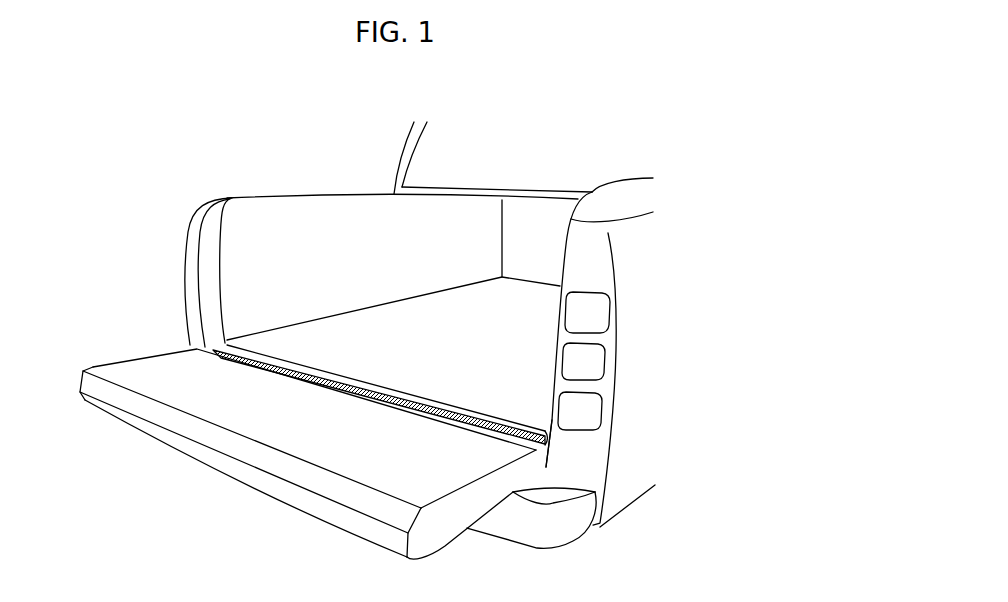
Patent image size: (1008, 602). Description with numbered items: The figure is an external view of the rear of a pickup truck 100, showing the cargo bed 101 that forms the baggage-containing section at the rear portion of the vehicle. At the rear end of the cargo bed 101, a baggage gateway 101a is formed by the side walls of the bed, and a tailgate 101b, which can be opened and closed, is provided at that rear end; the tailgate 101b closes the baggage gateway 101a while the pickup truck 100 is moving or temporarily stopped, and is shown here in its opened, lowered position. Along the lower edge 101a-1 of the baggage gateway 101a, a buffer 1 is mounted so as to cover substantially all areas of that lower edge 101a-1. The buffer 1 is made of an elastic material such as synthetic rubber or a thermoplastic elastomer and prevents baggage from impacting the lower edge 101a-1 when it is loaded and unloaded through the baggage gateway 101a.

The pickup truck 100 is at (394, 340).
The cargo bed 101 is at (326, 238).
The baggage gateway 101a is at (557, 318).
The lower edge 101a-1 is at (547, 437).
The tailgate 101b is at (223, 468).
The buffer 1 is at (387, 387).